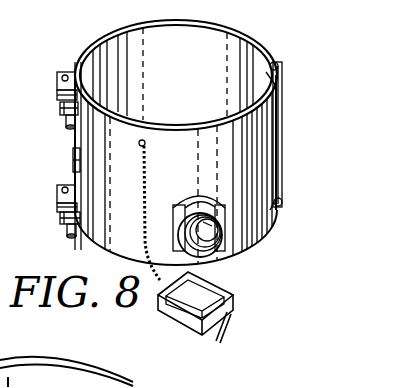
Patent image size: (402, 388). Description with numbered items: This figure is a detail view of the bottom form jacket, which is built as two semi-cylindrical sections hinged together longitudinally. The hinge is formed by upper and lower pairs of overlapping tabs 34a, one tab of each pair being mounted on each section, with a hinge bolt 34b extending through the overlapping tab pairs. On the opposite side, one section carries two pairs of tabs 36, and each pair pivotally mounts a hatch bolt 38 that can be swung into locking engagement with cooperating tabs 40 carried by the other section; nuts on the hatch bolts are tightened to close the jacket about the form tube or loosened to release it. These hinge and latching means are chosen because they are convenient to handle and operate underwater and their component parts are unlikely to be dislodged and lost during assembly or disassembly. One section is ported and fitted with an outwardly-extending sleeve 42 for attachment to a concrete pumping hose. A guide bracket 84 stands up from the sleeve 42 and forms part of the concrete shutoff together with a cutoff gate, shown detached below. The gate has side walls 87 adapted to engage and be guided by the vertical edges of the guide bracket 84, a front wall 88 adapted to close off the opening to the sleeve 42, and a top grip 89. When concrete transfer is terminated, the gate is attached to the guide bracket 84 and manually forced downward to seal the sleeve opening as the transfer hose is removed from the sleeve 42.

The overlapping tabs 34a is at (275, 62).
The hinge bolt 34b is at (278, 162).
The tabs 36 is at (62, 72).
The hatch bolt 38 is at (60, 98).
The cooperating tabs 40 is at (63, 128).
The guide bracket 84 is at (218, 207).
The sleeve 42 is at (206, 250).
The side walls 87 is at (238, 297).
The front wall 88 is at (227, 319).
The top grip 89 is at (233, 340).